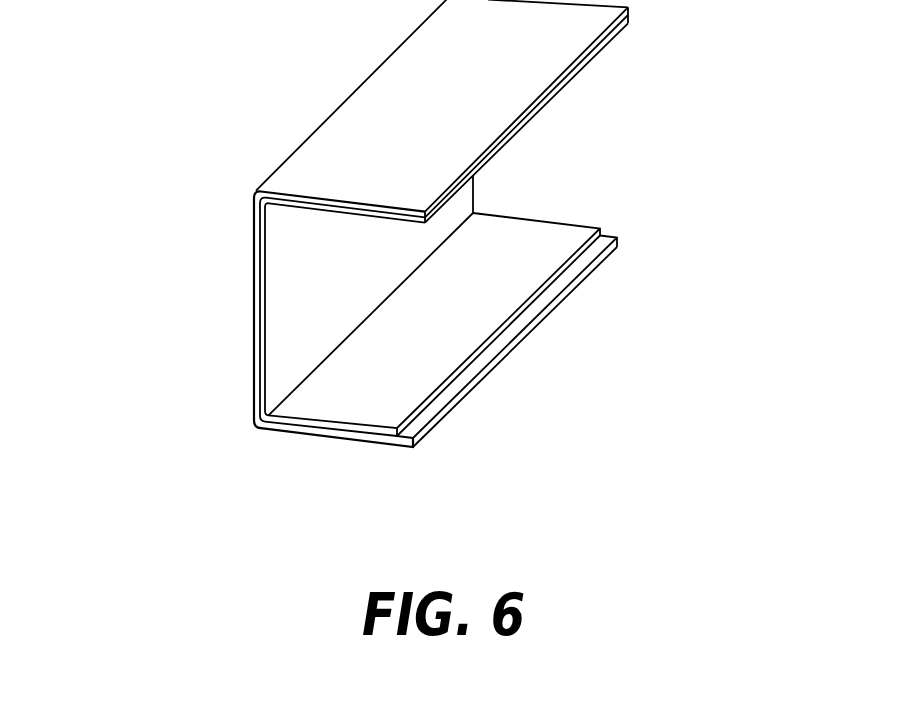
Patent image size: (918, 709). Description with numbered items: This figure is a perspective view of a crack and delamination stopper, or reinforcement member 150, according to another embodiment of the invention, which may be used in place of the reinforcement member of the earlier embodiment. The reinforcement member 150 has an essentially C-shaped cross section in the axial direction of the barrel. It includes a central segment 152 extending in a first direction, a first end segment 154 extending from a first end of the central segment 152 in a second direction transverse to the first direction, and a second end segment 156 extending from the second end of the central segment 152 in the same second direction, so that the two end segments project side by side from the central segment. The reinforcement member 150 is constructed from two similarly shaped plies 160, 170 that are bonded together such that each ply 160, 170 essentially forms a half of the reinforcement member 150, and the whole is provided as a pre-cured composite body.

The reinforcement member 150 is at (190, 184).
The central segment 152 is at (382, 278).
The first end segment 154 is at (533, 268).
The second end segment 156 is at (346, 130).
The ply 160 is at (386, 444).
The ply 170 is at (266, 302).